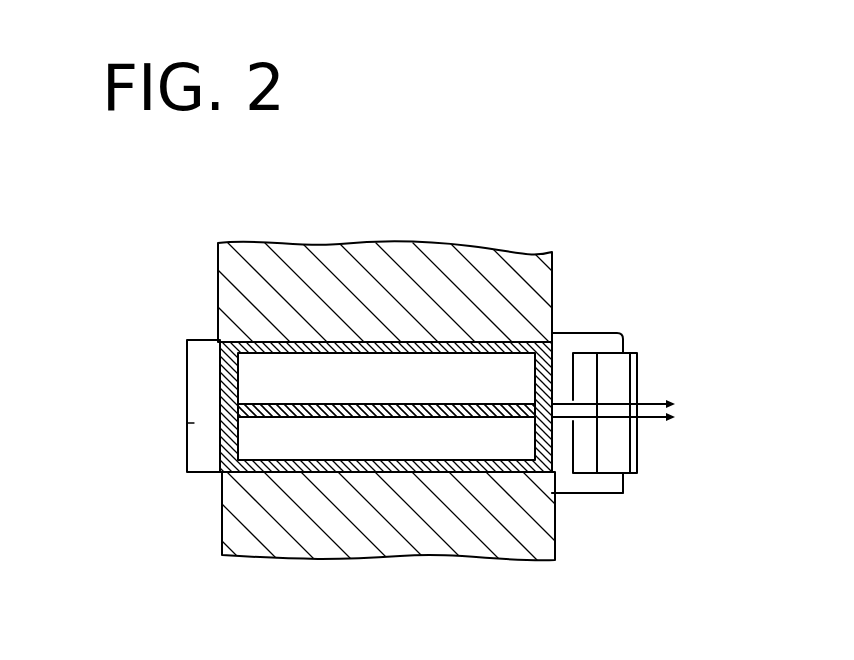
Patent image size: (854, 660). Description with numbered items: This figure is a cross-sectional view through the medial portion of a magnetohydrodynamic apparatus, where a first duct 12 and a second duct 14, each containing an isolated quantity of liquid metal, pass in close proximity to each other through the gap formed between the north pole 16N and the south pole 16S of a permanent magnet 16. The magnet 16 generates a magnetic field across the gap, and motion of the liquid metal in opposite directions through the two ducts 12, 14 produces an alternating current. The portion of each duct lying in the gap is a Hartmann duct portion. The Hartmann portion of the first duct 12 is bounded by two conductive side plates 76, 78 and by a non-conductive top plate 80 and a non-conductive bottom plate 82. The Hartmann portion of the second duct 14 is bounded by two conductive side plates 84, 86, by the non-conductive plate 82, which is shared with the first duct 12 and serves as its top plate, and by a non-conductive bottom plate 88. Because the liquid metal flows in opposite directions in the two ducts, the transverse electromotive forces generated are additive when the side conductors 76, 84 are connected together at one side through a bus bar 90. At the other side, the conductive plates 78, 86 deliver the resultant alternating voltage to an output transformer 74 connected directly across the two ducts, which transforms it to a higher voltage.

The first duct 12 is at (148, 391).
The second duct 14 is at (152, 457).
The permanent magnet 16 is at (422, 230).
The north pole 16N is at (552, 277).
The south pole 16S is at (555, 542).
The output transformer 74 is at (662, 382).
The conductive side plate 76 is at (218, 370).
The conductive side plate 78 is at (557, 367).
The non-conductive top plate 80 is at (492, 360).
The non-conductive plate 82 is at (398, 417).
The conductive side plate 84 is at (213, 452).
The conductive side plate 86 is at (572, 495).
The non-conductive bottom plate 88 is at (364, 460).
The bus bar 90 is at (190, 423).